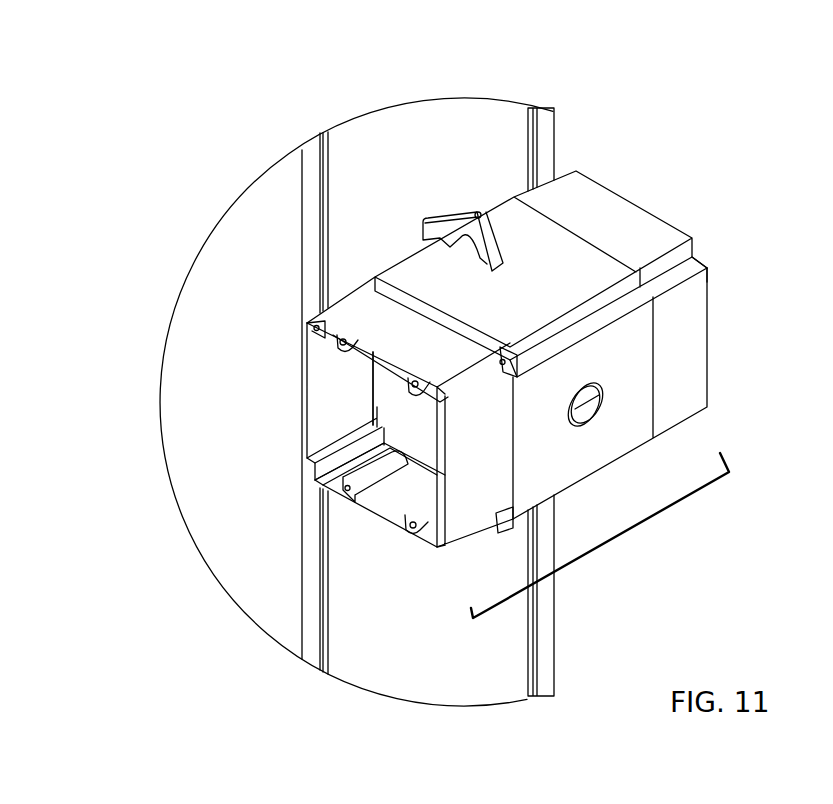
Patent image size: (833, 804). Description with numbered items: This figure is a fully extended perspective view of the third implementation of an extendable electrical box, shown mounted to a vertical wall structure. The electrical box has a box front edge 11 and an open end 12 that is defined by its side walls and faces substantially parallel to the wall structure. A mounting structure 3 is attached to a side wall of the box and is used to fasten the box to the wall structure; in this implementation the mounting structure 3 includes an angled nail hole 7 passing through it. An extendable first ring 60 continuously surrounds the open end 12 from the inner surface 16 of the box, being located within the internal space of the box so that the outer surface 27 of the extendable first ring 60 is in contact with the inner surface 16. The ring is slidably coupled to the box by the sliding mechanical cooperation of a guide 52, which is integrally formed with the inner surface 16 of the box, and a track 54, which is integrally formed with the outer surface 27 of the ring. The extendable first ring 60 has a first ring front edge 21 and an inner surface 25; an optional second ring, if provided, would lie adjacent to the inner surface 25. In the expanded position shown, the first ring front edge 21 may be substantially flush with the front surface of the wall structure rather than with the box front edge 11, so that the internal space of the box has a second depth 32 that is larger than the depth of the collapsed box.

The mounting structure 3 is at (442, 232).
The angled nail hole 7 is at (478, 216).
The box front edge 11 is at (497, 517).
The open end 12 is at (433, 443).
The inner surface 16 is at (397, 367).
The first ring front edge 21 is at (447, 535).
The inner surface 25 is at (392, 497).
The outer surface 27 is at (693, 358).
The second depth 32 is at (632, 530).
The guide 52 is at (519, 374).
The track 54 is at (315, 327).
The extendable first ring 60 is at (358, 317).